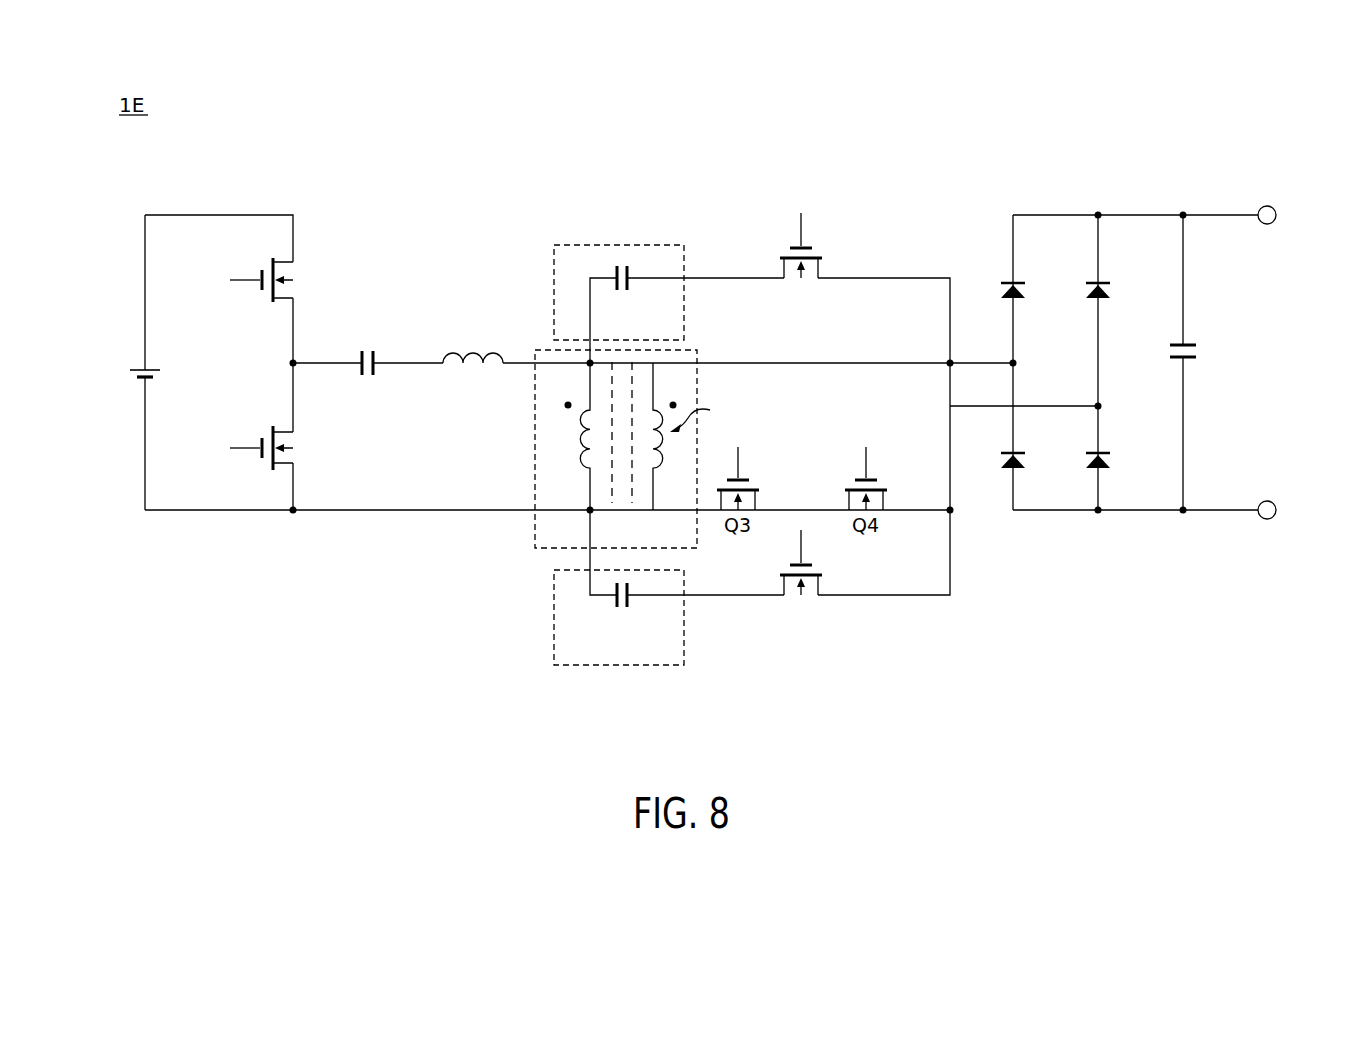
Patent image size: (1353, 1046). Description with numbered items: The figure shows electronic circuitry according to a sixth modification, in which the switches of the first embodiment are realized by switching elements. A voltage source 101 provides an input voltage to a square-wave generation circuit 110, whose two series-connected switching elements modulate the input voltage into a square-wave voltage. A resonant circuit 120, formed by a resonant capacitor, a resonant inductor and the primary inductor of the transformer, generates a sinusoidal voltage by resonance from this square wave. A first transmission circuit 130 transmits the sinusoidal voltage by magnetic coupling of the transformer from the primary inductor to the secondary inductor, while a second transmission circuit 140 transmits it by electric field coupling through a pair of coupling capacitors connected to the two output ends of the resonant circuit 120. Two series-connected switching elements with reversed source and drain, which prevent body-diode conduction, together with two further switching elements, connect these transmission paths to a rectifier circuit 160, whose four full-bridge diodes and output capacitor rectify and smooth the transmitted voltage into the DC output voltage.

The voltage source 101 is at (134, 362).
The square-wave generation circuit 110 is at (322, 185).
The resonant circuit 120 is at (553, 190).
The first transmission circuit 130 is at (535, 456).
The second transmission circuit 140 is at (554, 263).
The rectifier circuit 160 is at (1248, 175).